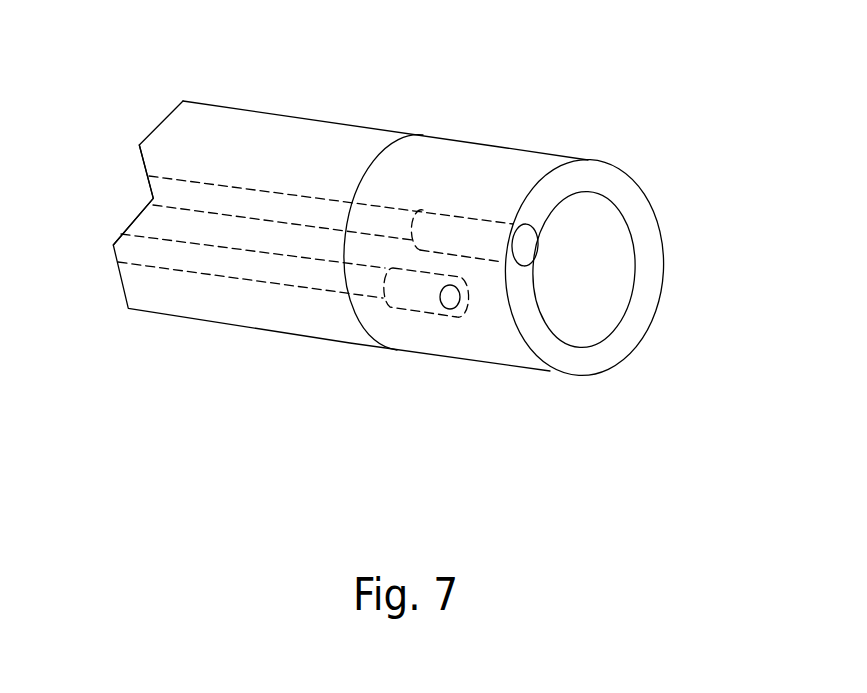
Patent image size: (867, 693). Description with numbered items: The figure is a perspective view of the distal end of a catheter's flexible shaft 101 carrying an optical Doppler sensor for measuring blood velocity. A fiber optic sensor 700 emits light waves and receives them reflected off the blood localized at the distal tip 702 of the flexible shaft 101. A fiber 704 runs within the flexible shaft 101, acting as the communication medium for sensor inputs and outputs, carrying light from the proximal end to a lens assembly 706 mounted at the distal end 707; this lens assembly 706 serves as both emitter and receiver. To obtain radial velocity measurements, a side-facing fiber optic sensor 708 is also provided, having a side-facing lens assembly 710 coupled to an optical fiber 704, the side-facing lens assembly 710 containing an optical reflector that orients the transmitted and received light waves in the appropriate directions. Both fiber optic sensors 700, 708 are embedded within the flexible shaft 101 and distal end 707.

The flexible shaft 101 is at (350, 326).
The distal tip 702 is at (610, 323).
The distal end 707 is at (506, 199).
The fiber 704 is at (175, 255).
The fiber optic sensor 700 is at (331, 300).
The side-facing fiber optic sensor 708 is at (293, 352).
The side-facing lens assembly 710 is at (408, 374).
The lens assembly 706 is at (448, 377).